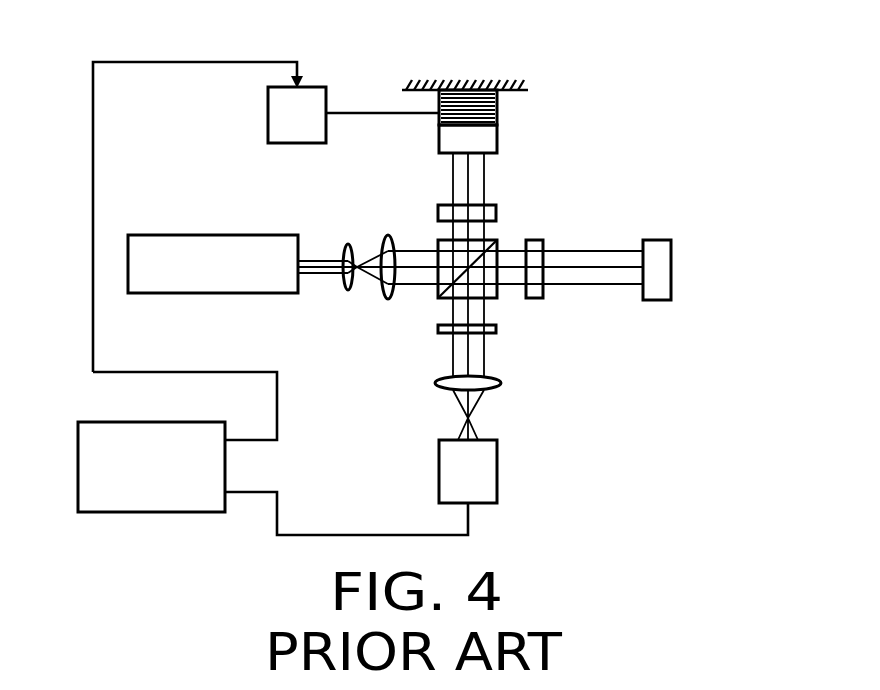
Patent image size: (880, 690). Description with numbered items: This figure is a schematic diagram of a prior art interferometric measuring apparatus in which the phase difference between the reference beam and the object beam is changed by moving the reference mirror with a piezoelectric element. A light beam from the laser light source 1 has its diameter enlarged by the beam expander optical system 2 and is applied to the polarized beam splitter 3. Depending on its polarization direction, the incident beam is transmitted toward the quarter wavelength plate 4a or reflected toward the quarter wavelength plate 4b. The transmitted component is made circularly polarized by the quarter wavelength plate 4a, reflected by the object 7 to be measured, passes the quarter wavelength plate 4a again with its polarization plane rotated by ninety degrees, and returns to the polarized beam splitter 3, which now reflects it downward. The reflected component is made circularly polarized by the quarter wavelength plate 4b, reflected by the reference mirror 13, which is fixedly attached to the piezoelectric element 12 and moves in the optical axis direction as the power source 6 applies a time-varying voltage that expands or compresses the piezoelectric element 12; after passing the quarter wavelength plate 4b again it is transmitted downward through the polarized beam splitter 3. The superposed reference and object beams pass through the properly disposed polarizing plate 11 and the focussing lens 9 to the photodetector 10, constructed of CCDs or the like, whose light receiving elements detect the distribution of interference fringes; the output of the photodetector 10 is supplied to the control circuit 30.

The laser light source 1 is at (240, 246).
The beam expander optical system 2 is at (400, 229).
The polarized beam splitter 3 is at (440, 297).
The quarter wavelength plate 4a is at (543, 243).
The quarter wavelength plate 4b is at (497, 214).
The power source 6 is at (315, 98).
The object to be measured 7 is at (662, 241).
The focussing lens 9 is at (501, 383).
The photodetector 10 is at (482, 478).
The polarizing plate 11 is at (497, 330).
The piezoelectric element 12 is at (497, 117).
The reference mirror 13 is at (488, 143).
The control circuit 30 is at (172, 434).